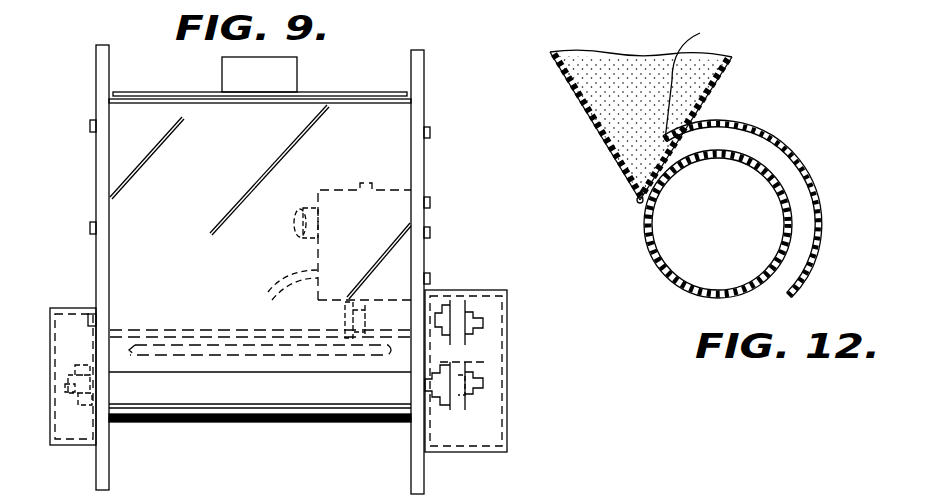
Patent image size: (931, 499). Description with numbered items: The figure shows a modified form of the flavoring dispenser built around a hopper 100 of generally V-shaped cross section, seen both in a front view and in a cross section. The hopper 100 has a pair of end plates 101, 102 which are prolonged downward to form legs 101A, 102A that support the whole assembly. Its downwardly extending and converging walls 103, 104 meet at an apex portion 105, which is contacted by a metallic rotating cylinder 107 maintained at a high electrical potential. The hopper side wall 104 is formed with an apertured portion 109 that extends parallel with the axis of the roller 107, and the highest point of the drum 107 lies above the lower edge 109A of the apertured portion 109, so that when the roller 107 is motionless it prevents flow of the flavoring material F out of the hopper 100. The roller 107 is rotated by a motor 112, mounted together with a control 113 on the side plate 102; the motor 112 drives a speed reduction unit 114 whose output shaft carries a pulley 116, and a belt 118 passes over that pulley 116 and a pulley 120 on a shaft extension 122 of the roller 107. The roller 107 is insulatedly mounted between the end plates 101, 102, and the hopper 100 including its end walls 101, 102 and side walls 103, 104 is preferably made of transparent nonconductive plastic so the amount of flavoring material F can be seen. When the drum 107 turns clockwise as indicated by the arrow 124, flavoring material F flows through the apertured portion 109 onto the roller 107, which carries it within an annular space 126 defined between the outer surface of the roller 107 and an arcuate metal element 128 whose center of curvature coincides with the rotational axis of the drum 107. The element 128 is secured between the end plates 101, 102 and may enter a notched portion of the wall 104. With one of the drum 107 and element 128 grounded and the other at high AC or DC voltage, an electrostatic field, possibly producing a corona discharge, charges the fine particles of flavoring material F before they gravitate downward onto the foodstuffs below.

In FIG. 12, the hopper 100 is at (591, 44).
In FIG. 9, the end plate 101 is at (96, 190).
In FIG. 9, the leg 101A is at (110, 452).
In FIG. 9, the end plate 102 is at (424, 168).
In FIG. 9, the leg 102A is at (425, 467).
In FIG. 9, the hopper wall 103 is at (260, 214).
In FIG. 12, the hopper wall 103 is at (606, 133).
In FIG. 12, the hopper side wall 104 is at (707, 101).
In FIG. 12, the apex portion 105 is at (636, 204).
In FIG. 9, the rotating cylinder 107 is at (306, 424).
In FIG. 12, the rotating cylinder 107 is at (685, 288).
In FIG. 12, the apertured portion 109 is at (707, 78).
In FIG. 12, the lower edge 109A is at (635, 178).
In FIG. 9, the motor 112 is at (345, 190).
In FIG. 9, the control 113 is at (303, 207).
In FIG. 9, the speed reduction unit 114 is at (343, 318).
In FIG. 9, the pulley 116 is at (470, 300).
In FIG. 9, the belt 118 is at (465, 355).
In FIG. 9, the pulley 120 is at (490, 408).
In FIG. 9, the shaft extension 122 is at (488, 385).
In FIG. 12, the arrow 124 is at (745, 197).
In FIG. 12, the annular space 126 is at (770, 158).
In FIG. 12, the arcuate metal element 128 is at (818, 207).
In FIG. 12, the flavoring material F is at (637, 62).